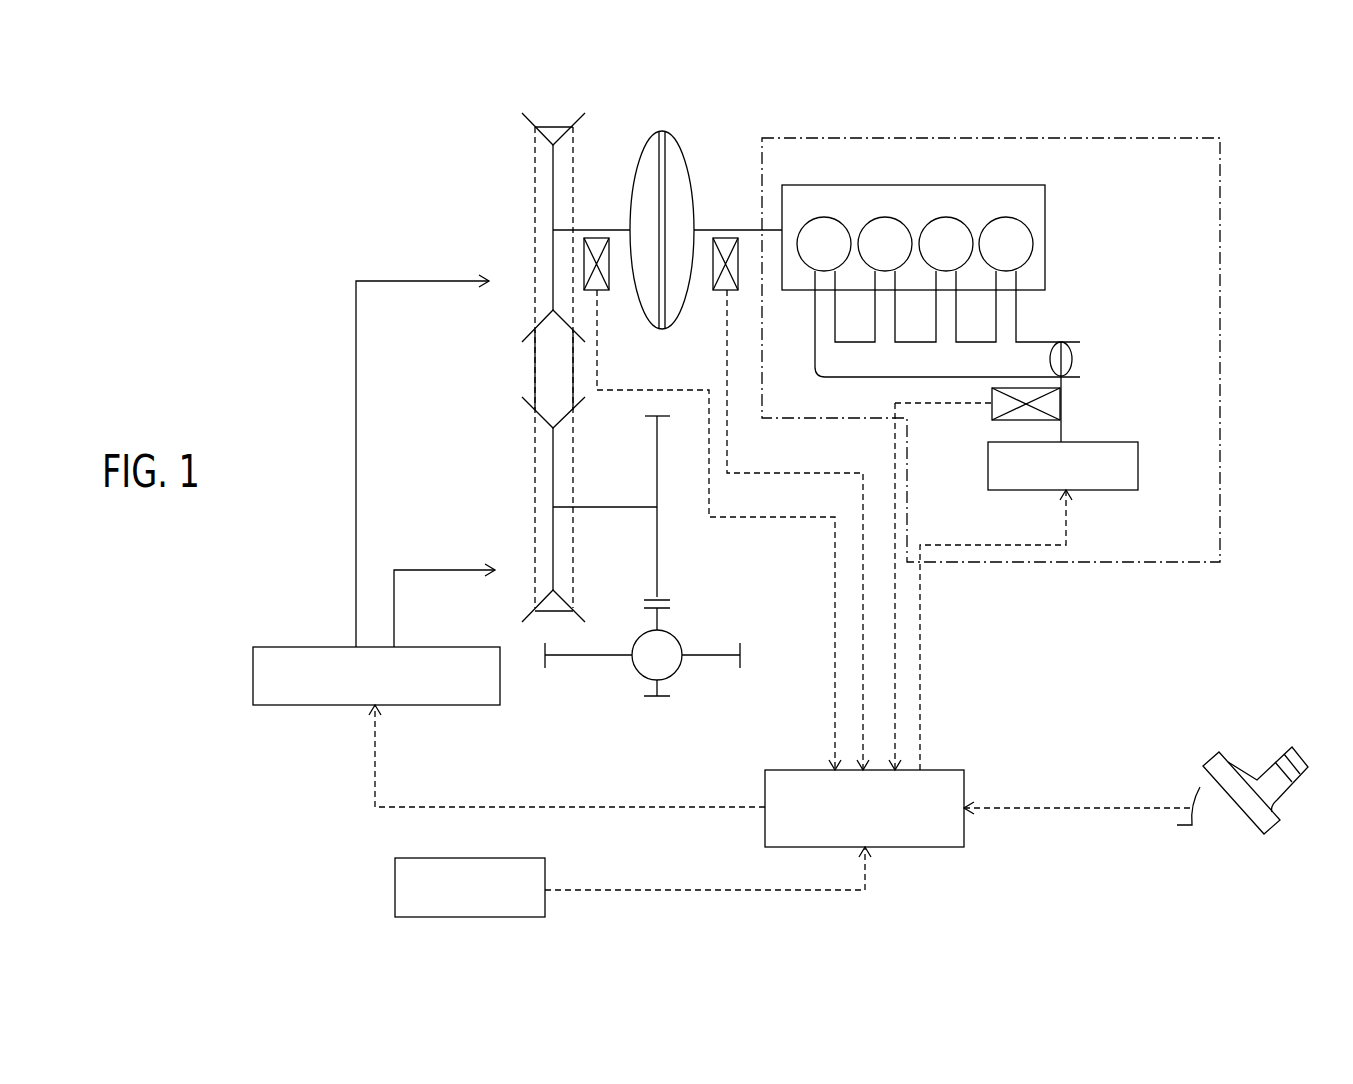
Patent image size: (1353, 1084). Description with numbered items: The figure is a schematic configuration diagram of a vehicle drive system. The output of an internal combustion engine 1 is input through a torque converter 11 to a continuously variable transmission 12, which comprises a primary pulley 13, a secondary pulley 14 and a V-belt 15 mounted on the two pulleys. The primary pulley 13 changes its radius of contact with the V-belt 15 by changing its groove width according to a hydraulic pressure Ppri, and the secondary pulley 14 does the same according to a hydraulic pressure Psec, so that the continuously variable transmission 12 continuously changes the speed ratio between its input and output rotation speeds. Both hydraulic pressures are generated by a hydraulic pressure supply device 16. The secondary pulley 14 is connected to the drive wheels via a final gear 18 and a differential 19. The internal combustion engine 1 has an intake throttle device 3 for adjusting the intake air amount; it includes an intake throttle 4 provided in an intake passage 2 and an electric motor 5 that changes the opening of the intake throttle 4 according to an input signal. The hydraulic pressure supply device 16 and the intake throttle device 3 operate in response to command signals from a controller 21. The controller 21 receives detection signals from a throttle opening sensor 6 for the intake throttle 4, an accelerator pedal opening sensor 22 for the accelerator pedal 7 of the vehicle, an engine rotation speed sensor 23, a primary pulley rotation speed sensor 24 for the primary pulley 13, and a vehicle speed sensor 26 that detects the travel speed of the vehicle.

The internal combustion engine 1 is at (1125, 138).
The intake passage 2 is at (1040, 342).
The intake throttle device 3 is at (1075, 405).
The intake throttle 4 is at (1072, 357).
The electric motor 5 is at (1138, 452).
The throttle opening sensor 6 is at (992, 418).
The accelerator pedal 7 is at (1220, 755).
The torque converter 11 is at (682, 152).
The continuously variable transmission 12 is at (462, 222).
The primary pulley 13 is at (535, 127).
The secondary pulley 14 is at (527, 400).
The V-belt 15 is at (535, 360).
The hydraulic pressure supply device 16 is at (298, 647).
The final gear 18 is at (660, 575).
The differential 19 is at (681, 645).
The controller 21 is at (964, 780).
The accelerator pedal opening sensor 22 is at (1198, 790).
The engine rotation speed sensor 23 is at (722, 292).
The primary pulley rotation speed sensor 24 is at (603, 292).
The vehicle speed sensor 26 is at (395, 880).